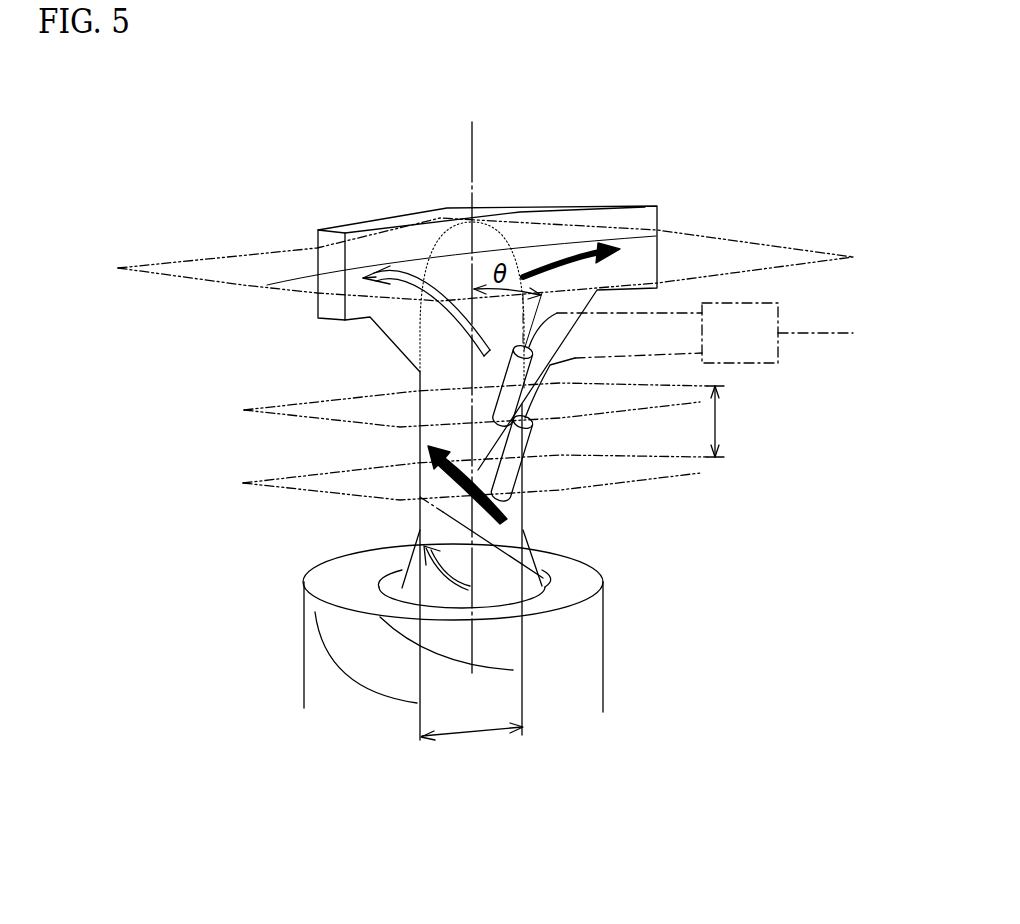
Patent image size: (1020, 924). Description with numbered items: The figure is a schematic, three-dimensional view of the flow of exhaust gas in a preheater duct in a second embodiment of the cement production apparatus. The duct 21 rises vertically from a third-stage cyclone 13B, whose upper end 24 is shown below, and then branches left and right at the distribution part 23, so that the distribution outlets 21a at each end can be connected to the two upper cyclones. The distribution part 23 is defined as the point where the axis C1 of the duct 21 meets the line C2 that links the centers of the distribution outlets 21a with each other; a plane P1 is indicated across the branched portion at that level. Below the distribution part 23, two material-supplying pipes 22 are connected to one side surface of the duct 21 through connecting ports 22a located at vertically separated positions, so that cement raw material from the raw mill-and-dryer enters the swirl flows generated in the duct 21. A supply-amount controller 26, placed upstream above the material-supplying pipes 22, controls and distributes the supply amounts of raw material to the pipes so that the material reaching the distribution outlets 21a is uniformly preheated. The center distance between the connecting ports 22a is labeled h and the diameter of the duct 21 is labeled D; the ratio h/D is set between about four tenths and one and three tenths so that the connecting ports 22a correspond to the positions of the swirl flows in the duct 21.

The cyclone 13B is at (603, 622).
The duct 21 is at (423, 443).
The distribution outlet 21a is at (322, 266).
The material-supplying pipe 22 is at (530, 370).
The connecting port 22a is at (490, 430).
The distribution part 23 is at (448, 325).
The upper end 24 is at (340, 570).
The supply-amount controller 26 is at (752, 358).
The axis of the duct C1 is at (470, 160).
The line linking centers of the distribution outlets C2 is at (297, 283).
The reference plane P1 is at (732, 244).
The center distance between connecting ports h is at (720, 421).
The diameter of the duct D is at (472, 717).